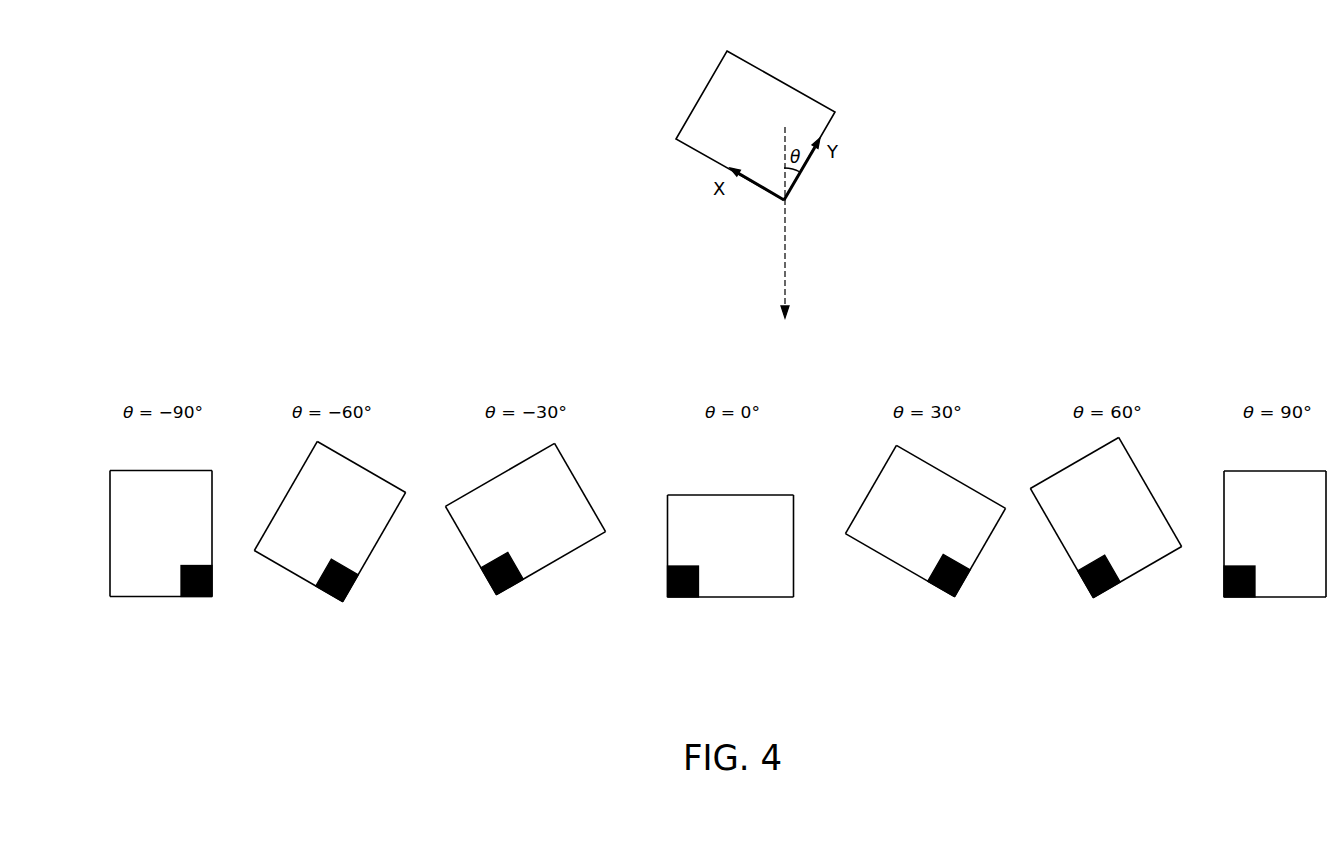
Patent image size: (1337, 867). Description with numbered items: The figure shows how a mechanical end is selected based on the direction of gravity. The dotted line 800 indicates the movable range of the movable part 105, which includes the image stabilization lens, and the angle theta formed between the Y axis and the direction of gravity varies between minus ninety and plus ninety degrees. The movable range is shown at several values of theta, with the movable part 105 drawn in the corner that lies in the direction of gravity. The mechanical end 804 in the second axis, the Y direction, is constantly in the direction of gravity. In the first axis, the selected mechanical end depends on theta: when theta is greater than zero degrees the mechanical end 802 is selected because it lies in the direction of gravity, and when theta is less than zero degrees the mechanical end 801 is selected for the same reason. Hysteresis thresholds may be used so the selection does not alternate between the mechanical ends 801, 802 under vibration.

The dotted line 800 is at (786, 85).
The movable part 105 is at (197, 566).
The mechanical end 801 is at (153, 598).
The mechanical end 802 is at (985, 545).
The mechanical end 804 is at (213, 552).